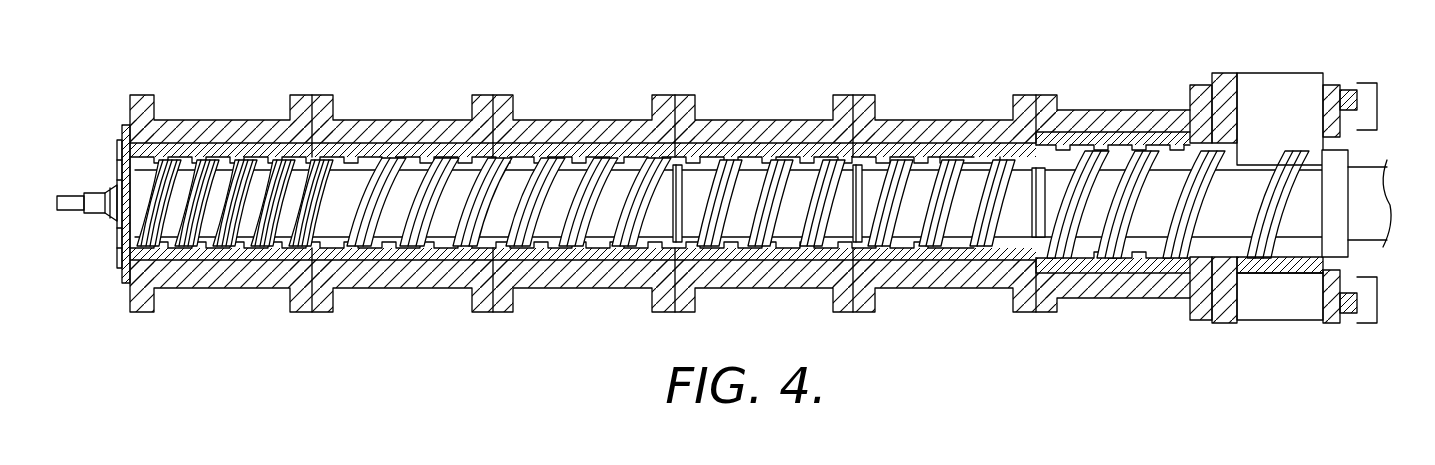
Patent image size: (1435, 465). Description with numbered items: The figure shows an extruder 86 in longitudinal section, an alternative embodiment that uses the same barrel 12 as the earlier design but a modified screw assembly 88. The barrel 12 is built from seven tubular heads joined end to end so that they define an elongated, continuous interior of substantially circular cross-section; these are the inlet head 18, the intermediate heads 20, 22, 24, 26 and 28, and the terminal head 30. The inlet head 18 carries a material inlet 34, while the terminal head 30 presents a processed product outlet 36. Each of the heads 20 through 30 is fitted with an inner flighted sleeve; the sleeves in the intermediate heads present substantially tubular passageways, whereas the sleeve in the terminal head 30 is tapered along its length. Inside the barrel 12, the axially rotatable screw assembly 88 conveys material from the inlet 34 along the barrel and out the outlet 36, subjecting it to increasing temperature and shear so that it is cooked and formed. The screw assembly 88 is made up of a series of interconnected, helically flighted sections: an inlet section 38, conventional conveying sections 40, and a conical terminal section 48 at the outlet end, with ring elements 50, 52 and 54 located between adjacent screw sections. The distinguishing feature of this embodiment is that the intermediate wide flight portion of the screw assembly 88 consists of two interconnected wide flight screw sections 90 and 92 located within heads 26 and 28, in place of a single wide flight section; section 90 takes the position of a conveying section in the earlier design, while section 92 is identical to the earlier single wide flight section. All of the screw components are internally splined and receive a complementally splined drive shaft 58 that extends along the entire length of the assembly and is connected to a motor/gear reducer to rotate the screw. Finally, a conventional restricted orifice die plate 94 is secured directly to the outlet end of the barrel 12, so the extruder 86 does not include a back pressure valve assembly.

The barrel 12 is at (1093, 93).
The inlet head 18 is at (1292, 265).
The tubular head 20 is at (1133, 285).
The tubular head 22 is at (940, 278).
The tubular head 24 is at (775, 278).
The tubular head 26 is at (565, 278).
The tubular head 28 is at (418, 278).
The terminal head 30 is at (215, 280).
The material inlet 34 is at (1310, 82).
The processed product outlet 36 is at (118, 233).
The inlet section 38 is at (1248, 180).
The conveying section 40 is at (805, 178).
The conical terminal section 48 is at (204, 160).
The ring element 50 is at (1037, 212).
The ring element 52 is at (862, 188).
The ring element 54 is at (683, 192).
The drive shaft 58 is at (1367, 208).
The extruder 86 is at (1178, 72).
The screw assembly 88 is at (977, 162).
The wide flight screw section 90 is at (587, 170).
The wide flight screw section 92 is at (392, 145).
The restricted orifice die plate 94 is at (117, 170).